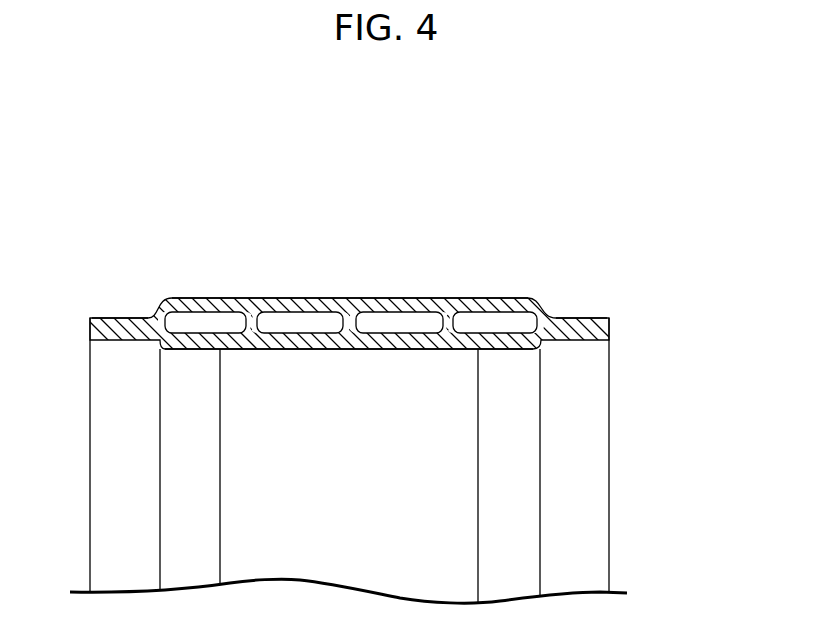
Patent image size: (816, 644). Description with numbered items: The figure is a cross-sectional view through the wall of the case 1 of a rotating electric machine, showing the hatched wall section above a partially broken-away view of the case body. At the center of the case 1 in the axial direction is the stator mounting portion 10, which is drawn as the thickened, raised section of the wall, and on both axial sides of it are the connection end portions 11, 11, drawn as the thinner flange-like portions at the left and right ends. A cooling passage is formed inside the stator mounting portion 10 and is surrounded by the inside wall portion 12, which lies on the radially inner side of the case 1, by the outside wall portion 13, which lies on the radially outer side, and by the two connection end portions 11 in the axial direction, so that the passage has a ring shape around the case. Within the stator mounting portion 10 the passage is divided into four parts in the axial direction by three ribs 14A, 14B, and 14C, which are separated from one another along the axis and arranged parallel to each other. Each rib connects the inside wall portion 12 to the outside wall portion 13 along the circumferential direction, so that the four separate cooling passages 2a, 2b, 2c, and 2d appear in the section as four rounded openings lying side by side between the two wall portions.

The case 1 is at (609, 472).
The cooling passage 2a is at (495, 322).
The cooling passage 2b is at (405, 322).
The cooling passage 2c is at (280, 320).
The cooling passage 2d is at (183, 317).
The stator mounting portion 10 is at (345, 298).
The connection end portion 11 is at (118, 318).
The inside wall portion 12 is at (346, 350).
The outside wall portion 13 is at (380, 298).
The rib 14A is at (446, 322).
The rib 14B is at (341, 320).
The rib 14C is at (247, 320).